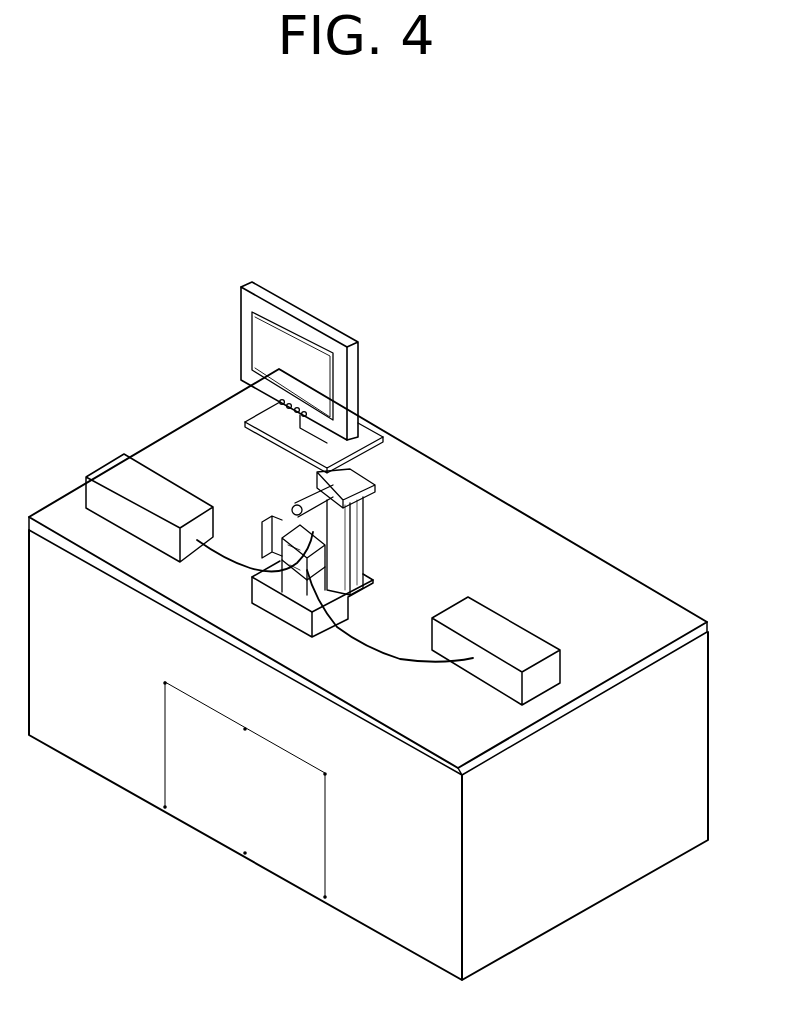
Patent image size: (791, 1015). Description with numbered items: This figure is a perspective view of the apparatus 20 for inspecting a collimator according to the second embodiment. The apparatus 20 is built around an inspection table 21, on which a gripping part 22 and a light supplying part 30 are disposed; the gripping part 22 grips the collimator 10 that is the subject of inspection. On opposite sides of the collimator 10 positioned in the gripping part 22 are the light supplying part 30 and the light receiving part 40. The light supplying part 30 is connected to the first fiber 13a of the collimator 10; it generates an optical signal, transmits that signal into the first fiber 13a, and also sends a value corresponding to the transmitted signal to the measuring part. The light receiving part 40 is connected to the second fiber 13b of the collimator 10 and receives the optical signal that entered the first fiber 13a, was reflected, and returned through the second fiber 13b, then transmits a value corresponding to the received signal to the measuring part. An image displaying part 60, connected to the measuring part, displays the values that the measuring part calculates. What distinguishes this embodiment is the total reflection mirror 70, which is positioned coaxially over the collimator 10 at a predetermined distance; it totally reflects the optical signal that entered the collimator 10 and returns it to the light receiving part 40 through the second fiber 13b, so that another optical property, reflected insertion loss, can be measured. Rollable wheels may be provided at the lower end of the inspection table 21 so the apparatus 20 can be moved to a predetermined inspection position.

The collimator 10 is at (285, 526).
The first fiber 13a is at (200, 541).
The second fiber 13b is at (393, 657).
The apparatus for inspecting a collimator 20 is at (118, 337).
The inspection table 21 is at (492, 502).
The gripping part 22 is at (289, 588).
The light supplying part 30 is at (117, 513).
The light receiving part 40 is at (532, 630).
The image displaying part 60 is at (310, 320).
The total reflection mirror 70 is at (292, 504).